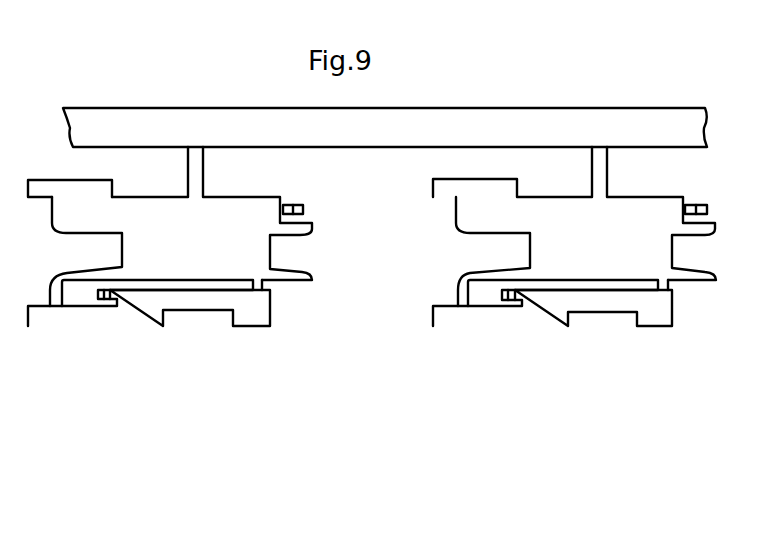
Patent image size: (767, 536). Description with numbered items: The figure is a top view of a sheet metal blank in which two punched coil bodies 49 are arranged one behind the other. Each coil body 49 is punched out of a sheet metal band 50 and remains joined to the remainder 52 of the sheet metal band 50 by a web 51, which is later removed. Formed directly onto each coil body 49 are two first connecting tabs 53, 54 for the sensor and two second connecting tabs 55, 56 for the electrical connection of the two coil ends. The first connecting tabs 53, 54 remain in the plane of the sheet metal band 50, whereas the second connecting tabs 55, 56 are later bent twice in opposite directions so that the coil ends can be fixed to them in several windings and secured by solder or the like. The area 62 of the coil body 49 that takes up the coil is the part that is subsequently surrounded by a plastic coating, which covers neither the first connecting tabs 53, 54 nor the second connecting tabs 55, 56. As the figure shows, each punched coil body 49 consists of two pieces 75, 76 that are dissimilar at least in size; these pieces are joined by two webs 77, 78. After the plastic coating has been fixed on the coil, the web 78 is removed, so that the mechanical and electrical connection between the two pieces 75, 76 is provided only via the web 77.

The sheet metal band 50 is at (164, 107).
The remainder of the sheet metal band 52 is at (100, 118).
The web 51 is at (197, 170).
The first connecting tab 53 is at (442, 187).
The coil body 49 is at (242, 212).
The second connecting tab 55 is at (697, 206).
The piece of the coil body 75 is at (150, 251).
The area of the coil body 62 is at (232, 250).
The web 78 is at (264, 287).
The piece of the coil body 76 is at (260, 313).
The web 77 is at (467, 290).
The first connecting tab 54 is at (442, 317).
The second connecting tab 56 is at (508, 300).